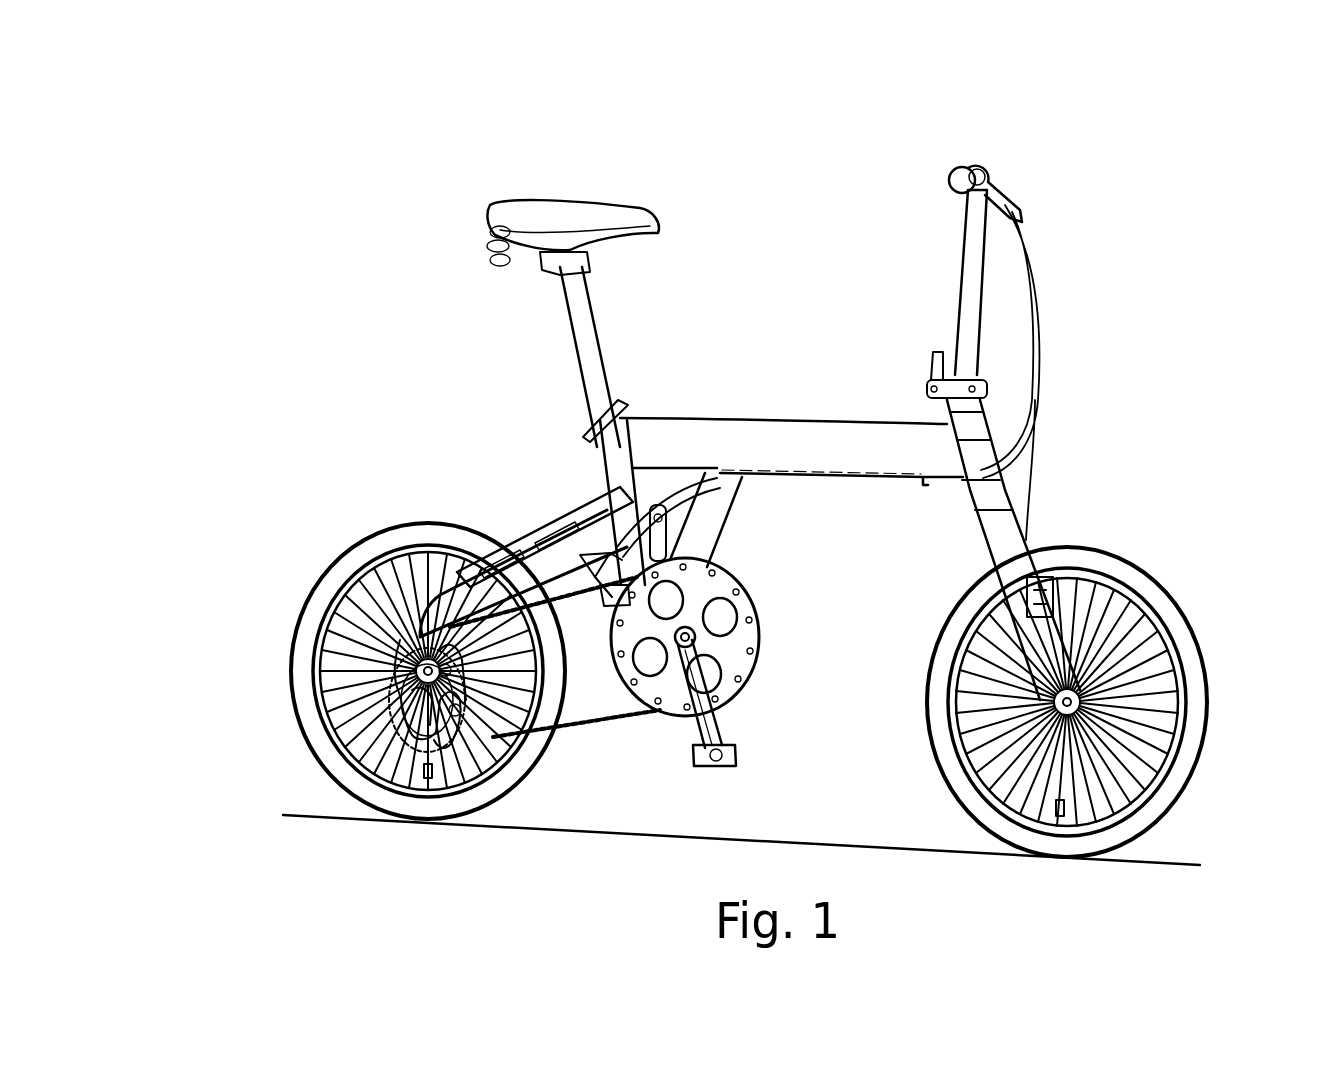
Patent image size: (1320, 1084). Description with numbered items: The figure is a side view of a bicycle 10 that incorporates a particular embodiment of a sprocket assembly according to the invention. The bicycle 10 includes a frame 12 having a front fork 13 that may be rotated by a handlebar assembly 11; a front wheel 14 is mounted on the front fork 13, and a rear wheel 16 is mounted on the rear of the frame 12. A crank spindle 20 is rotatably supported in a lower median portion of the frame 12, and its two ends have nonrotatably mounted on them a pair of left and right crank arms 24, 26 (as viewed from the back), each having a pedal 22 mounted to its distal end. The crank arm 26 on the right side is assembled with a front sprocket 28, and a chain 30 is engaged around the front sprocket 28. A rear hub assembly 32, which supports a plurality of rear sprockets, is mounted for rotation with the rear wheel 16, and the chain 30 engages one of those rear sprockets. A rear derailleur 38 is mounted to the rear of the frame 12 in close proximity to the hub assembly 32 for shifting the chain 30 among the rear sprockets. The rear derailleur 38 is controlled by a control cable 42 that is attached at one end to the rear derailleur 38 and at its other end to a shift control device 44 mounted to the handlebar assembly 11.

The bicycle 10 is at (295, 181).
The handlebar assembly 11 is at (955, 250).
The frame 12 is at (752, 443).
The front fork 13 is at (985, 522).
The front wheel 14 is at (1160, 590).
The rear wheel 16 is at (340, 563).
The crank spindle 20 is at (692, 638).
The pedal 22 is at (680, 510).
The left crank arm 24 is at (700, 550).
The right crank arm 26 is at (728, 715).
The front sprocket 28 is at (760, 600).
The chain 30 is at (608, 722).
The rear hub assembly 32 is at (386, 640).
The rear derailleur 38 is at (425, 697).
The control cable 42 is at (467, 733).
The shift control device 44 is at (965, 170).